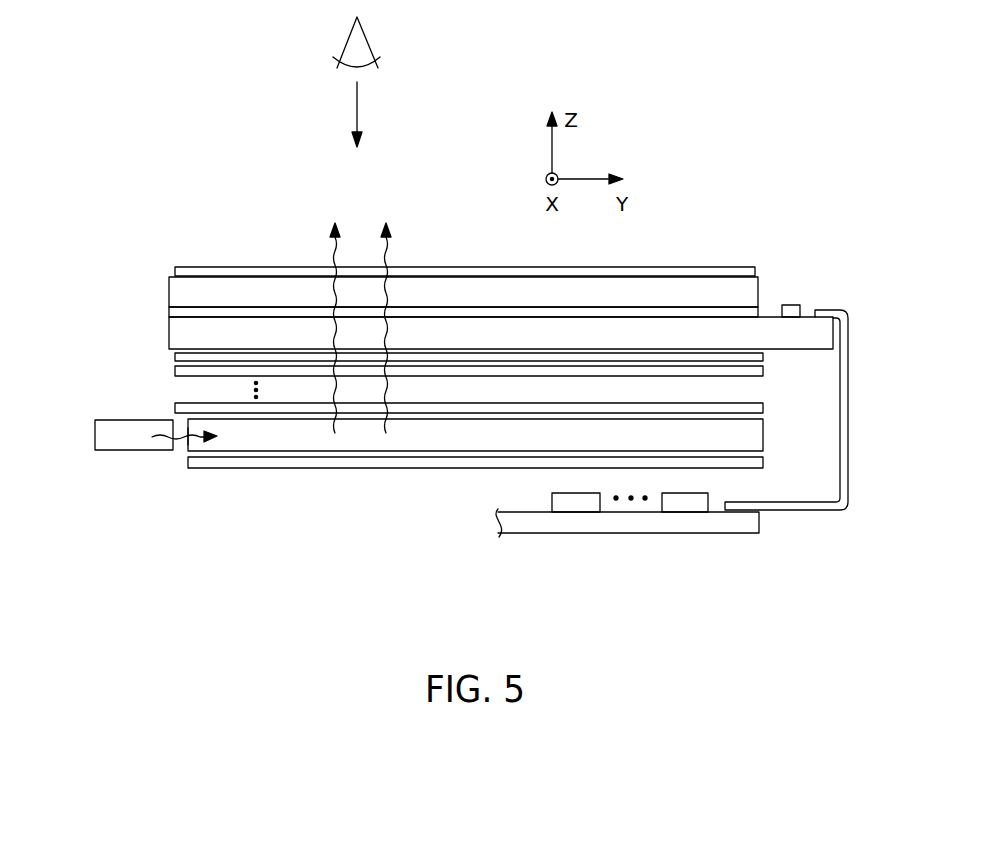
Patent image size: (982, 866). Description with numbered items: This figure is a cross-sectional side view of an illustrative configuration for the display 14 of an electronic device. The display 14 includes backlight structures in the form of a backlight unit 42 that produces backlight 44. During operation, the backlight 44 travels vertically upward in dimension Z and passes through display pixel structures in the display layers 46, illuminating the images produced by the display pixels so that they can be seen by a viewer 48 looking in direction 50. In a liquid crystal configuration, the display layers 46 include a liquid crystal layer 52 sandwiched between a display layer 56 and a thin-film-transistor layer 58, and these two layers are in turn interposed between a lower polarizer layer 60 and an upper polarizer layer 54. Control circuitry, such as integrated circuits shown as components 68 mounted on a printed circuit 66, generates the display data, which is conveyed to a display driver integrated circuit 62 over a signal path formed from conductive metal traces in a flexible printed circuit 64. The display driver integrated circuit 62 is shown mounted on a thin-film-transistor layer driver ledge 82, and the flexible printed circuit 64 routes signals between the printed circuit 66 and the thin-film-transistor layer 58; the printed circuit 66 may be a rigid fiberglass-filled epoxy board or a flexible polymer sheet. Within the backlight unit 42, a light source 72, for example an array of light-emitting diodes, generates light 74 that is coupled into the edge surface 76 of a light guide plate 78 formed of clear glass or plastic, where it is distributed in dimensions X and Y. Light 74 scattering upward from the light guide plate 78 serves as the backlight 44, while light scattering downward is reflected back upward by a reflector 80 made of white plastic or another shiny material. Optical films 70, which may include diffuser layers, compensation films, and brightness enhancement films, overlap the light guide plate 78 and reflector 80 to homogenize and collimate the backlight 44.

The display 14 is at (787, 113).
The backlight unit 42 is at (777, 363).
The backlight 44 is at (389, 251).
The display layers 46 is at (133, 265).
The viewer 48 is at (368, 42).
The direction 50 is at (357, 117).
The liquid crystal layer 52 is at (225, 312).
The upper polarizer layer 54 is at (188, 271).
The display layer 56 is at (169, 288).
The thin-film-transistor layer 58 is at (169, 335).
The lower polarizer layer 60 is at (175, 356).
The display driver integrated circuit 62 is at (802, 310).
The flexible printed circuit 64 is at (847, 357).
The printed circuit 66 is at (597, 531).
The components 68 is at (597, 492).
The optical films 70 is at (182, 404).
The light source 72 is at (102, 443).
The light 74 is at (160, 433).
The edge surface 76 is at (187, 443).
The light guide plate 78 is at (252, 449).
The reflector 80 is at (313, 466).
The thin-film-transistor layer driver ledge 82 is at (765, 288).